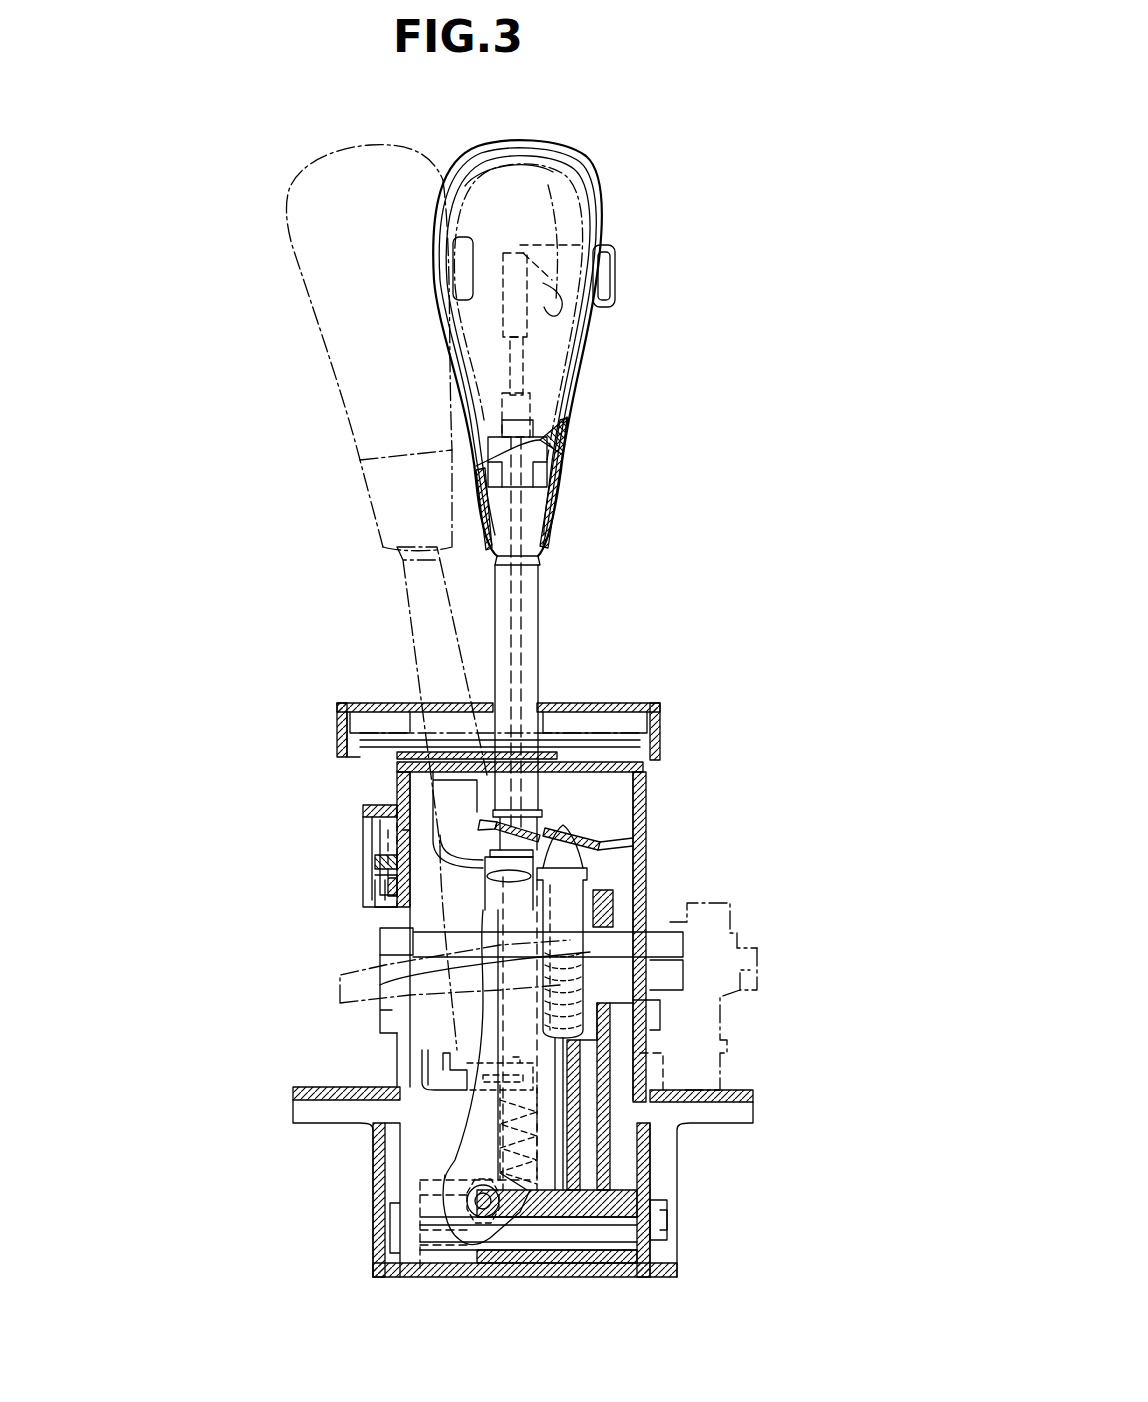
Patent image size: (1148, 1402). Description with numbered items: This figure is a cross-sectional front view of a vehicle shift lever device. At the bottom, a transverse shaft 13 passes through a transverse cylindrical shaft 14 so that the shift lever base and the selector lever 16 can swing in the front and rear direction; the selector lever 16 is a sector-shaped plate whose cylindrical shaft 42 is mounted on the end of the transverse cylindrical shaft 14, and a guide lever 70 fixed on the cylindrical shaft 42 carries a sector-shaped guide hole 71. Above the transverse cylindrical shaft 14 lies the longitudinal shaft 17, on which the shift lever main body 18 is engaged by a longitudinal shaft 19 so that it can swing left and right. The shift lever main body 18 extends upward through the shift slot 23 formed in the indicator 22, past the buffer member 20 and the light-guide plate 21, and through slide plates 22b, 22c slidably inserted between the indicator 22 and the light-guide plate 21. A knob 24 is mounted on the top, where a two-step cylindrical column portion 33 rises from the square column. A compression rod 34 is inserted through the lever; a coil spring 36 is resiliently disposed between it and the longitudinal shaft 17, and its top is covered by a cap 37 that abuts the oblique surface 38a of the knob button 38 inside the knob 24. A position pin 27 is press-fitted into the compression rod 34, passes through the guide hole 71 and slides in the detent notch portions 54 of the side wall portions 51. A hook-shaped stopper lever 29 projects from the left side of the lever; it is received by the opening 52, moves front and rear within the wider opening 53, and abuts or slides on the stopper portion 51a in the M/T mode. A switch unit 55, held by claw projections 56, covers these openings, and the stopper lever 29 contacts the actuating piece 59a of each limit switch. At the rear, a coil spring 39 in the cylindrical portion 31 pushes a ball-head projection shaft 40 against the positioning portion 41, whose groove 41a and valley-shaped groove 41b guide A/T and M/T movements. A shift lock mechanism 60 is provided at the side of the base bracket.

The transverse shaft 13 is at (390, 1233).
The transverse cylindrical shaft 14 is at (505, 1272).
The selector lever 16 is at (578, 1095).
The longitudinal shaft 17 is at (478, 1192).
The shift lever main body 18 is at (545, 580).
The longitudinal shaft 19 is at (483, 1205).
The buffer member 20 is at (345, 748).
The light-guide plate 21 is at (397, 755).
The indicator 22 is at (637, 705).
The slide plate 22b is at (630, 736).
The slide plate 22c is at (650, 741).
The shift slot 23 is at (440, 712).
The knob 24 is at (580, 208).
The position pin 27 is at (670, 945).
The stopper lever 29 is at (410, 838).
The cylindrical portion 31 is at (587, 876).
The cylindrical column portion 33 is at (395, 570).
The compression rod 34 is at (520, 673).
The coil spring 36 is at (530, 1140).
The cap 37 is at (533, 325).
The knob button 38 is at (463, 258).
The oblique surface 38a is at (562, 298).
The coil spring 39 is at (655, 1040).
The ball-head projection shaft 40 is at (560, 853).
The positioning portion 41 is at (770, 705).
The groove 41a is at (555, 812).
The valley-shaped groove 41b is at (545, 822).
The cylindrical shaft 42 is at (575, 1275).
The side wall portion 51 is at (395, 772).
The stopper portion 51a is at (418, 792).
The opening 52 is at (390, 830).
The opening 53 is at (380, 895).
The detent notch portion 54 is at (390, 1013).
The switch unit 55 is at (365, 810).
The claw projection 56 is at (390, 945).
The actuating piece 59a is at (380, 880).
The shift lock mechanism 60 is at (733, 1027).
The guide lever 70 is at (605, 905).
The guide hole 71 is at (740, 967).